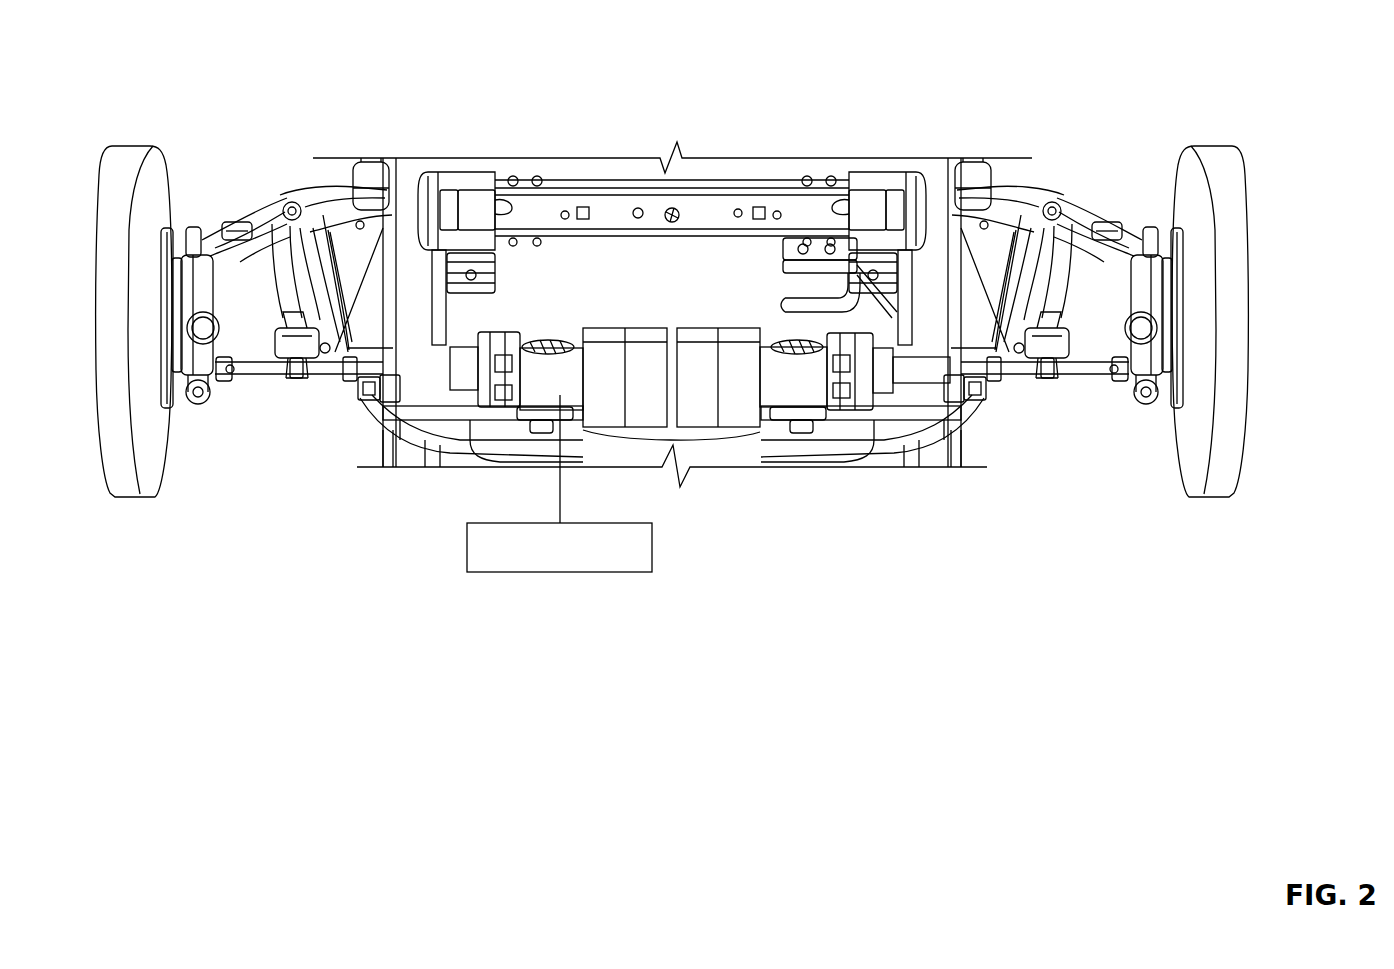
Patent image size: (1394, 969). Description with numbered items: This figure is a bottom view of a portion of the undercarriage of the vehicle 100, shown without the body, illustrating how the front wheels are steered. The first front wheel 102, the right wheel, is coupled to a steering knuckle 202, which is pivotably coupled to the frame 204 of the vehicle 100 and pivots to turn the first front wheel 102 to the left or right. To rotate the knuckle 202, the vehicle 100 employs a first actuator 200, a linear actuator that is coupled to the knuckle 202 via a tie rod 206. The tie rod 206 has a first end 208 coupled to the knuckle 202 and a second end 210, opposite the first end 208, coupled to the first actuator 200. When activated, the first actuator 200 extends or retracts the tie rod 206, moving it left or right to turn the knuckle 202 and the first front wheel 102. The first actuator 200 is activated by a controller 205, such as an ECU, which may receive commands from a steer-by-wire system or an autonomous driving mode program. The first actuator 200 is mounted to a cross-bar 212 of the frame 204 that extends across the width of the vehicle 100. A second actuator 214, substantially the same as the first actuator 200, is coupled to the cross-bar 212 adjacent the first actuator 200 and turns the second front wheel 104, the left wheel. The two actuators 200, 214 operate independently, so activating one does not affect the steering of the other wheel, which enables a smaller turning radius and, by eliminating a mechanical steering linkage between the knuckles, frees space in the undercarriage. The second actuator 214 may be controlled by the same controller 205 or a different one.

The vehicle 100 is at (257, 49).
The first front wheel 102 is at (136, 487).
The second front wheel 104 is at (1210, 490).
The first actuator 200 is at (549, 325).
The steering knuckle 202 is at (198, 228).
The frame 204 is at (617, 188).
The controller 205 is at (588, 524).
The tie rod 206 is at (307, 378).
The first end 208 is at (234, 382).
The second end 210 is at (360, 393).
The cross-bar 212 is at (467, 463).
The second actuator 214 is at (776, 323).